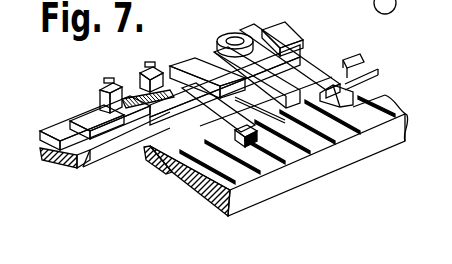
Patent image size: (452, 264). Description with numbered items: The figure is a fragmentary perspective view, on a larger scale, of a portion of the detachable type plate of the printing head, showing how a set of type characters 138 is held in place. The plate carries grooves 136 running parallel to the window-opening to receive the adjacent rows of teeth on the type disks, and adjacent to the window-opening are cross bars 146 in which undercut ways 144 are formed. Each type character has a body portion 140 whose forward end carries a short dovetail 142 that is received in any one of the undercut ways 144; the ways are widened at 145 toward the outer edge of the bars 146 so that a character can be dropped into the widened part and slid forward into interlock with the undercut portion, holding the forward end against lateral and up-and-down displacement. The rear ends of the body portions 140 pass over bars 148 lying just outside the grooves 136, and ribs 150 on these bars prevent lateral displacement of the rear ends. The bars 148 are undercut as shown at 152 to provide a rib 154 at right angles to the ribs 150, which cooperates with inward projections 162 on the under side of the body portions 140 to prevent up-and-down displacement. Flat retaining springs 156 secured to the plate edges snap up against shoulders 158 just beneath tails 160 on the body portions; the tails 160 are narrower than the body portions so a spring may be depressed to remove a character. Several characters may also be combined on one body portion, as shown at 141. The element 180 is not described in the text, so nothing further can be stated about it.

The grooves 136 is at (143, 140).
The type characters 138 is at (230, 34).
The body portion 140 is at (273, 67).
The combined characters 141 is at (182, 97).
The dovetail 142 is at (146, 85).
The undercut ways 144 is at (264, 32).
The widened portion of undercut way 145 is at (105, 137).
The cross bars 146 is at (42, 156).
The bars 148 is at (157, 165).
The ribs 150 is at (350, 62).
The undercut 152 is at (176, 186).
The rib 154 is at (368, 76).
The flat retaining springs 156 is at (335, 126).
The shoulders 158 is at (262, 150).
The tails 160 is at (295, 134).
The inward projections 162 is at (205, 168).
The pulley 180 is at (398, 9).